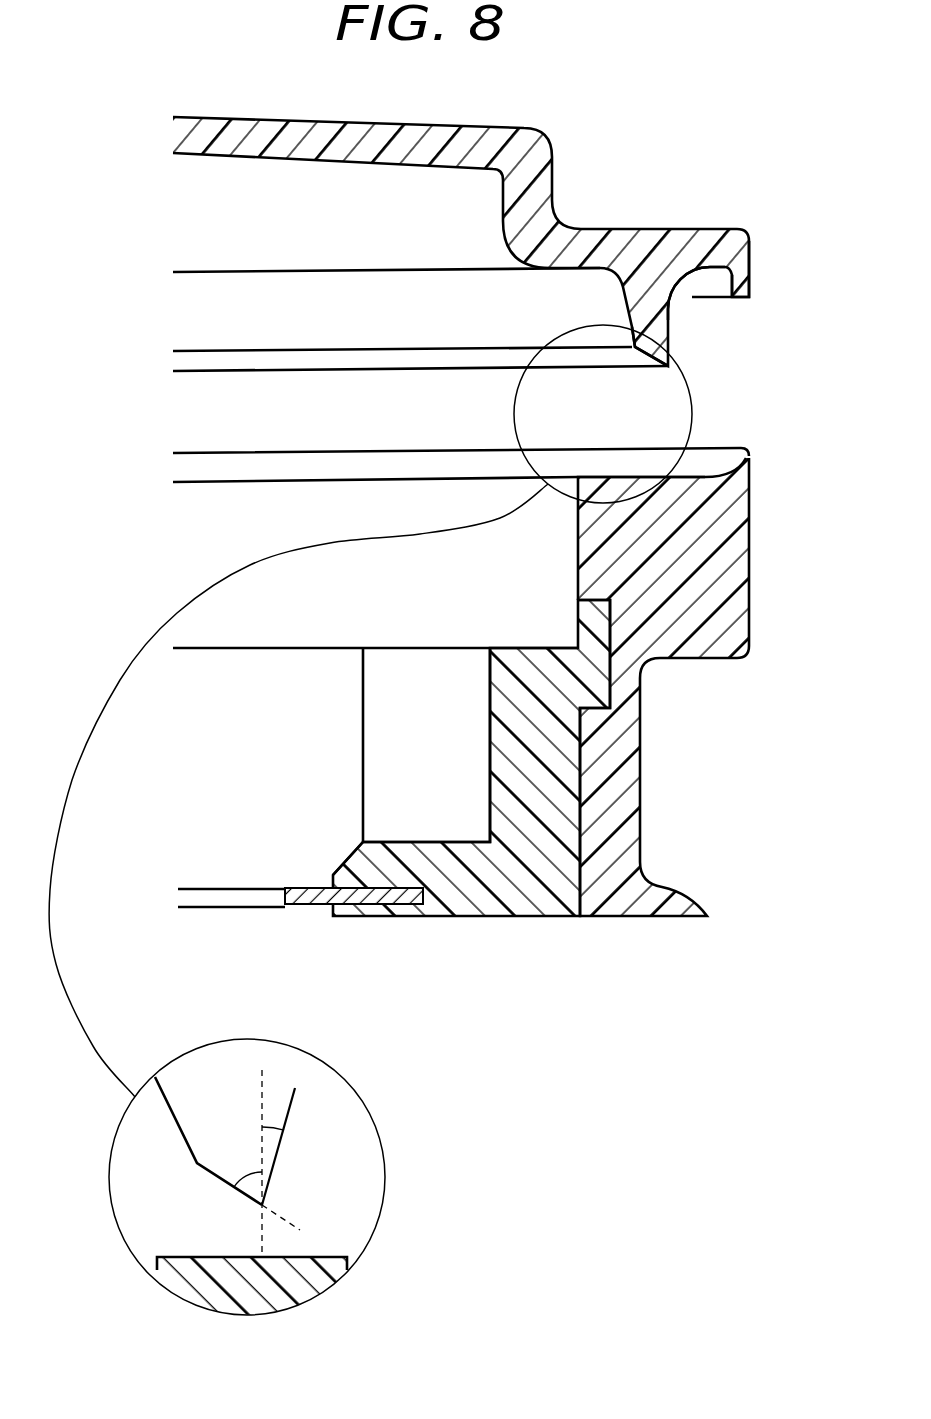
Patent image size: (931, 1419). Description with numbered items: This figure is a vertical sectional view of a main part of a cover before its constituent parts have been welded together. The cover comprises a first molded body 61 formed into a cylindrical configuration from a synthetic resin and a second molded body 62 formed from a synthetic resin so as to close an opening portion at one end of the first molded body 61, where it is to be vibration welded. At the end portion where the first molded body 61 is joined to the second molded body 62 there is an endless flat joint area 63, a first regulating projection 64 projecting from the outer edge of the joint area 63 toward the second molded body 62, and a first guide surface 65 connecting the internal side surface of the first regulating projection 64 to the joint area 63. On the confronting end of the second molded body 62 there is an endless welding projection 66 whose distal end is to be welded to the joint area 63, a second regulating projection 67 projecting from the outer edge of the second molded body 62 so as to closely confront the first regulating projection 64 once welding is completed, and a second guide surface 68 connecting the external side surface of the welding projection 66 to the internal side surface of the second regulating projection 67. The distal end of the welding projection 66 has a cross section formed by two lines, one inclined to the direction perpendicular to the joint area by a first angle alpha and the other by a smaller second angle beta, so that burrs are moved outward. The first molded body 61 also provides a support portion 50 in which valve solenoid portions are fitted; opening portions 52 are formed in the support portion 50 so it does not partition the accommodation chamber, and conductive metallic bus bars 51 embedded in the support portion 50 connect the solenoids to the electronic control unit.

The support portion 50 is at (476, 841).
The bus bar 51 is at (300, 905).
The opening portion 52 is at (332, 873).
The first molded body 61 is at (641, 836).
The second molded body 62 is at (552, 168).
The joint area 63 is at (657, 473).
The first regulating projection 64 is at (744, 448).
The first guide surface 65 is at (717, 470).
The welding projection 66 is at (631, 331).
The second regulating projection 67 is at (750, 268).
The second guide surface 68 is at (687, 307).